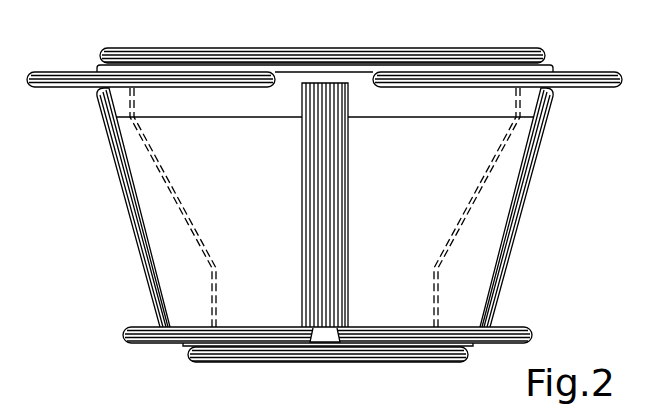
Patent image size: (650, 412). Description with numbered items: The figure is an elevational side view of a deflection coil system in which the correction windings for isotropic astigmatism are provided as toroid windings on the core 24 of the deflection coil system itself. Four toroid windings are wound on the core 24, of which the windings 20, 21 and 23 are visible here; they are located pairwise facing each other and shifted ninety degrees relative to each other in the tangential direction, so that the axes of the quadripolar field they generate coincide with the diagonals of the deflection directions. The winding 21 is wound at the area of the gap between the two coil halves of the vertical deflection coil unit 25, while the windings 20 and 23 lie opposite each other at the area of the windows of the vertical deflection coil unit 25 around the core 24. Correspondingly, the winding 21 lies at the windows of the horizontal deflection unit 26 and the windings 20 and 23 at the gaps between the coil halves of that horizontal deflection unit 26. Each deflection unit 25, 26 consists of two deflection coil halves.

The toroid winding 20 is at (140, 234).
The toroid winding 21 is at (332, 238).
The toroid winding 23 is at (515, 221).
The core 24 is at (412, 294).
The vertical deflection coil unit 25 is at (37, 88).
The horizontal deflection unit 26 is at (104, 56).